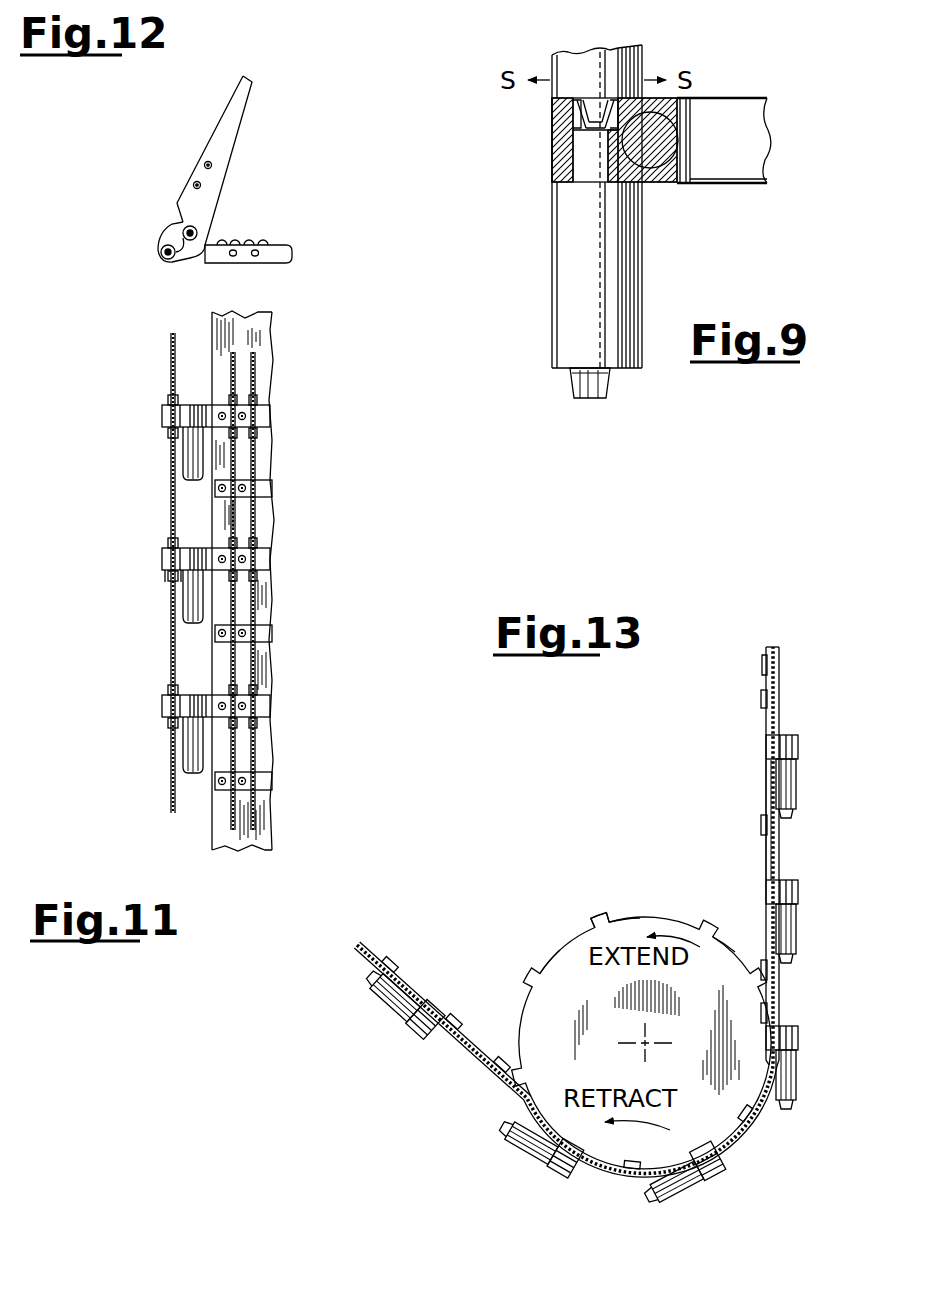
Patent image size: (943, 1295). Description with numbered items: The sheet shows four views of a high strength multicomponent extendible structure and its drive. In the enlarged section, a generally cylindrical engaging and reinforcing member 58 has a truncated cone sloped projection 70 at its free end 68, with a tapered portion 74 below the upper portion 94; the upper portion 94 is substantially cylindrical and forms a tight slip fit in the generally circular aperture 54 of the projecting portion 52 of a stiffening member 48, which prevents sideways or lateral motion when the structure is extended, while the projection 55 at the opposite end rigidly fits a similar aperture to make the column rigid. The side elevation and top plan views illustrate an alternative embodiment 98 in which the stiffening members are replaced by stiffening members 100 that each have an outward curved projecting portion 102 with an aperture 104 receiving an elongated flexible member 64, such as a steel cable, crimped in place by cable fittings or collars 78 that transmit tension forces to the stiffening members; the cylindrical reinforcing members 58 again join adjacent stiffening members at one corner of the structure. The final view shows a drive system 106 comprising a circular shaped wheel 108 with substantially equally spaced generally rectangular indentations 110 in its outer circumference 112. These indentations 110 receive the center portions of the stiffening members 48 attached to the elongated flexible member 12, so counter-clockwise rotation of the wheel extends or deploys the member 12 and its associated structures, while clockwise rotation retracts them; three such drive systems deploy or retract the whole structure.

In FIG. 13, the elongated flexible member 12 is at (781, 860).
In FIG. 9, the elongated stiffening member 48 is at (748, 152).
In FIG. 13, the elongated stiffening member 48 is at (765, 683).
In FIG. 9, the projecting portion 52 is at (553, 152).
In FIG. 13, the projecting portion 52 is at (798, 737).
In FIG. 9, the aperture 54 is at (618, 128).
In FIG. 9, the projection 55 is at (587, 162).
In FIG. 11, the engaging and reinforcing member 58 is at (188, 462).
In FIG. 9, the engaging and reinforcing member 58 is at (643, 65).
In FIG. 13, the engaging and reinforcing member 58 is at (798, 772).
In FIG. 11, the elongated flexible member 64 is at (255, 523).
In FIG. 13, the elongated flexible member 64 is at (765, 790).
In FIG. 9, the free end 68 is at (585, 105).
In FIG. 9, the truncated cone sloped projection 70 is at (590, 135).
In FIG. 13, the truncated cone sloped projection 70 is at (370, 987).
In FIG. 9, the tapered seat 74 is at (660, 148).
In FIG. 11, the cable fitting or collar 78 is at (170, 540).
In FIG. 9, the upper portion 94 is at (578, 120).
In FIG. 12, the alternative embodiment 98 is at (254, 266).
In FIG. 11, the alternative embodiment 98 is at (280, 446).
In FIG. 12, the stiffening member 100 is at (209, 148).
In FIG. 11, the stiffening member 100 is at (253, 410).
In FIG. 12, the outward curved projecting portion 102 is at (157, 256).
In FIG. 11, the outward curved projecting portion 102 is at (161, 422).
In FIG. 11, the aperture 104 is at (160, 574).
In FIG. 13, the drive system 106 is at (648, 838).
In FIG. 13, the circular shaped wheel 108 is at (603, 1001).
In FIG. 13, the indentation 110 is at (632, 917).
In FIG. 13, the outer circumference 112 is at (593, 920).